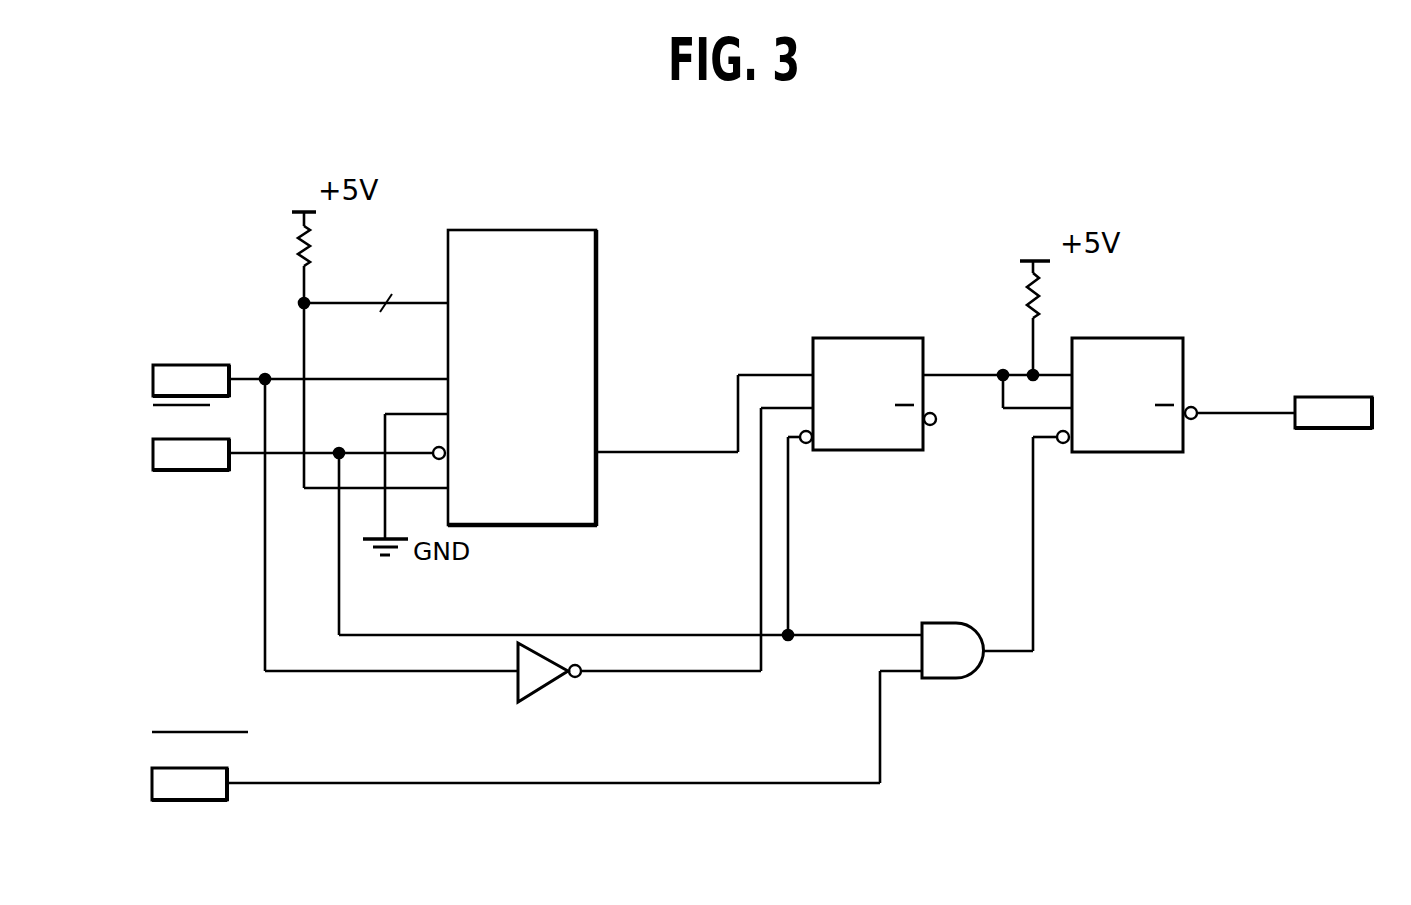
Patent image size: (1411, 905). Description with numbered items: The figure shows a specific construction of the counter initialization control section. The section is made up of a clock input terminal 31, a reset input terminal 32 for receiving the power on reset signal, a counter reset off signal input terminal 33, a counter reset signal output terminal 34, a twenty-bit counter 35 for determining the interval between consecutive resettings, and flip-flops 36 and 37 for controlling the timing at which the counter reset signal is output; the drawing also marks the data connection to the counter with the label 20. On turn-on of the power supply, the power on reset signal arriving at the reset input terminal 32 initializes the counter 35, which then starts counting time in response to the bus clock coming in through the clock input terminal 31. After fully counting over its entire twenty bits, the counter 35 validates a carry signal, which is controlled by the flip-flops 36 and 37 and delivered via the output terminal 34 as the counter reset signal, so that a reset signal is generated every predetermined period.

The data bus to counter D input 20 is at (376, 317).
The clock input terminal 31 is at (160, 383).
The reset input terminal 32 is at (160, 457).
The counter reset off signal input terminal 33 is at (205, 792).
The counter reset signal output terminal 34 is at (1333, 420).
The 20-bit counter 35 is at (585, 262).
The flip-flop 36 is at (878, 345).
The flip-flop 37 is at (1150, 343).